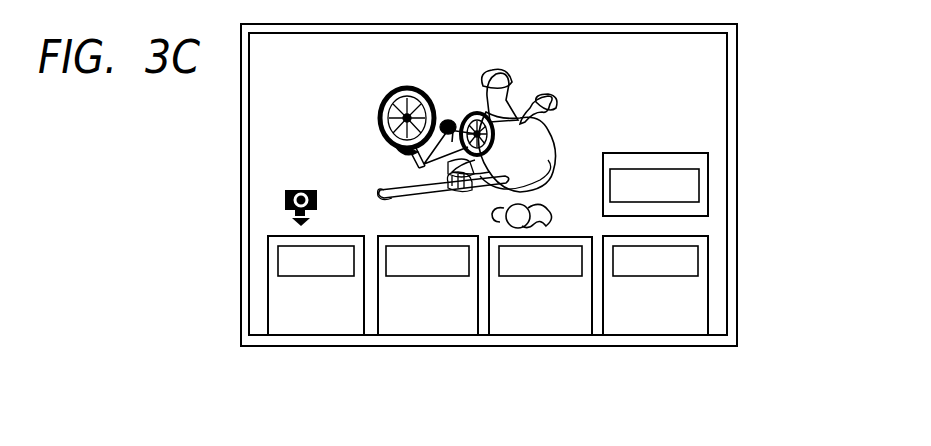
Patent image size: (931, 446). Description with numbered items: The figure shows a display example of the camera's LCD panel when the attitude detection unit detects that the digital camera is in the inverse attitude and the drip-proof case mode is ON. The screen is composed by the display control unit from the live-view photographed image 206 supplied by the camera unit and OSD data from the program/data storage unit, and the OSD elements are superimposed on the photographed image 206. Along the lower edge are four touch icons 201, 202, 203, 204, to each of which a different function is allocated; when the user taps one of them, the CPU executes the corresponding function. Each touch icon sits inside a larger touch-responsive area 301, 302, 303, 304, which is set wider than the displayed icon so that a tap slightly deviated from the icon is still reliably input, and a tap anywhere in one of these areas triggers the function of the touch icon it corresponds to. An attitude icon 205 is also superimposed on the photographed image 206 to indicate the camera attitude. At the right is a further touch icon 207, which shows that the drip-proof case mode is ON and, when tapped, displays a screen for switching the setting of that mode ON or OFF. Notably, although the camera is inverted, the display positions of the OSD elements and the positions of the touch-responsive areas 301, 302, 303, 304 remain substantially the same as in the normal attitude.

The touch icon 201 is at (292, 276).
The touch icon 202 is at (406, 276).
The touch icon 203 is at (522, 276).
The touch icon 204 is at (637, 276).
The attitude icon 205 is at (285, 200).
The photographed image 206 is at (685, 92).
The touch icon 207 is at (698, 188).
The touch-responsive area 301 is at (332, 320).
The touch-responsive area 302 is at (449, 320).
The touch-responsive area 303 is at (560, 320).
The touch-responsive area 304 is at (677, 320).